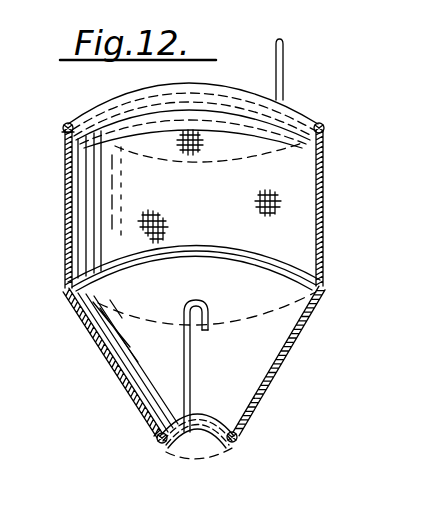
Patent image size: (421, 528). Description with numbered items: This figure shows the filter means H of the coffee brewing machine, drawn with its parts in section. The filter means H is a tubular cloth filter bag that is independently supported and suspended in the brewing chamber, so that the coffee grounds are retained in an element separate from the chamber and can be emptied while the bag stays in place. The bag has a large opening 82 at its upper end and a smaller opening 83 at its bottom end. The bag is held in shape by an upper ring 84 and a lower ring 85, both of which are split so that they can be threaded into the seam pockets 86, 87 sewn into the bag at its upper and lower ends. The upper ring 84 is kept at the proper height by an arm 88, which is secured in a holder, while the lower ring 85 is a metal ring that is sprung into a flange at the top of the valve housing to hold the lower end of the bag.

The large opening 82 is at (273, 132).
The smaller opening 83 is at (202, 440).
The upper ring 84 is at (326, 124).
The lower ring 85 is at (191, 355).
The seam pocket 86 is at (66, 125).
The seam pocket 87 is at (157, 438).
The arm 88 is at (284, 58).
The filter means H is at (325, 225).